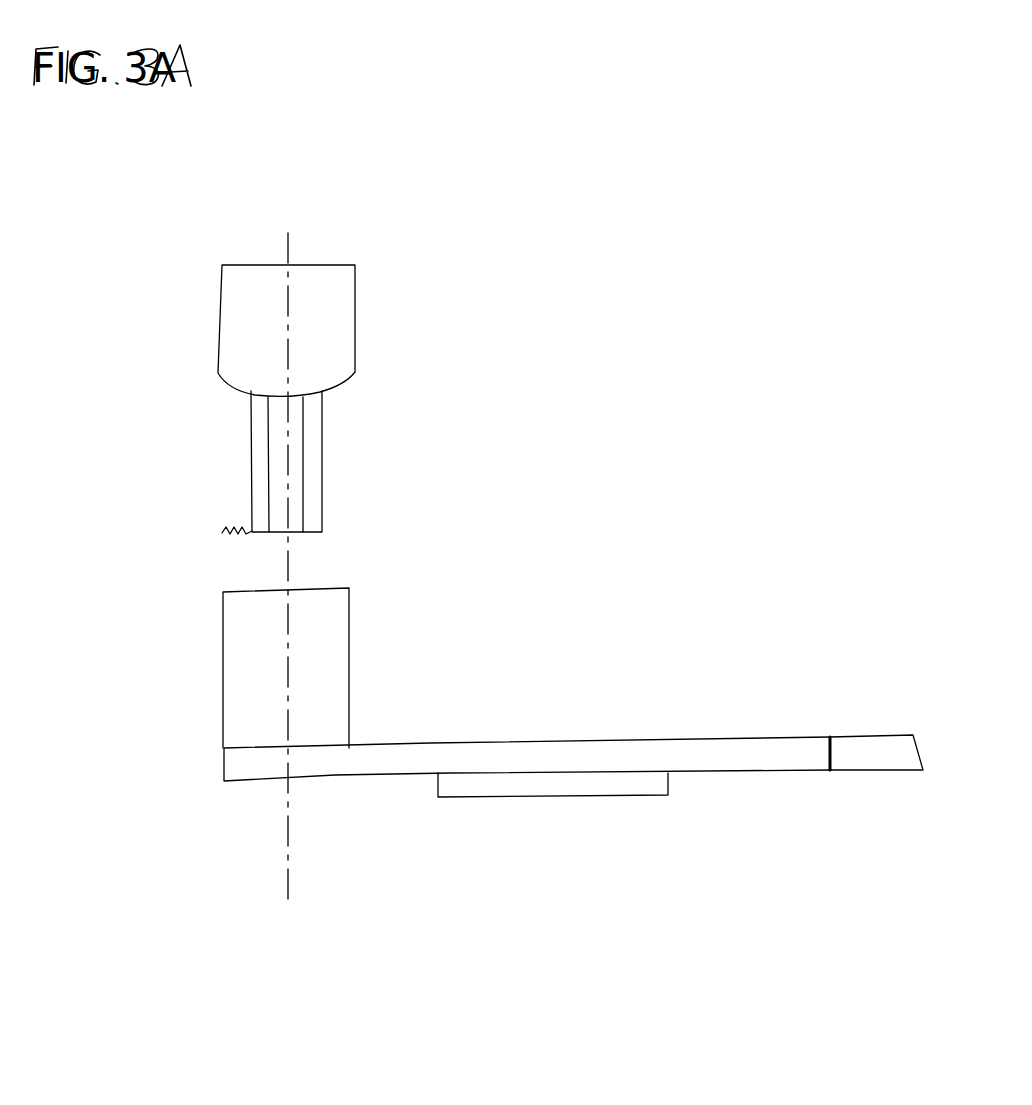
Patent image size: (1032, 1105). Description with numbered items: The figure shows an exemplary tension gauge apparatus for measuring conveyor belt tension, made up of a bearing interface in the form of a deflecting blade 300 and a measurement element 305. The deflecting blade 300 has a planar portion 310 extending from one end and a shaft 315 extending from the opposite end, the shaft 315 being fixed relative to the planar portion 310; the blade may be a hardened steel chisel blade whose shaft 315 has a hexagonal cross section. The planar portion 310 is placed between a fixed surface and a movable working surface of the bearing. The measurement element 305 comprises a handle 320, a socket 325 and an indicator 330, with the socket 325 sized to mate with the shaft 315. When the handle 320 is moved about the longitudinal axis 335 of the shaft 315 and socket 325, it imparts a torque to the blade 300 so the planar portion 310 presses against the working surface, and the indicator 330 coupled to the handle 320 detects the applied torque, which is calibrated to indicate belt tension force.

The deflecting blade 300 is at (483, 222).
The measurement element 305 is at (573, 757).
The planar portion 310 is at (263, 297).
The shaft 315 is at (287, 462).
The handle 320 is at (355, 858).
The socket 325 is at (322, 660).
The indicator 330 is at (562, 818).
The longitudinal axis 335 is at (235, 918).